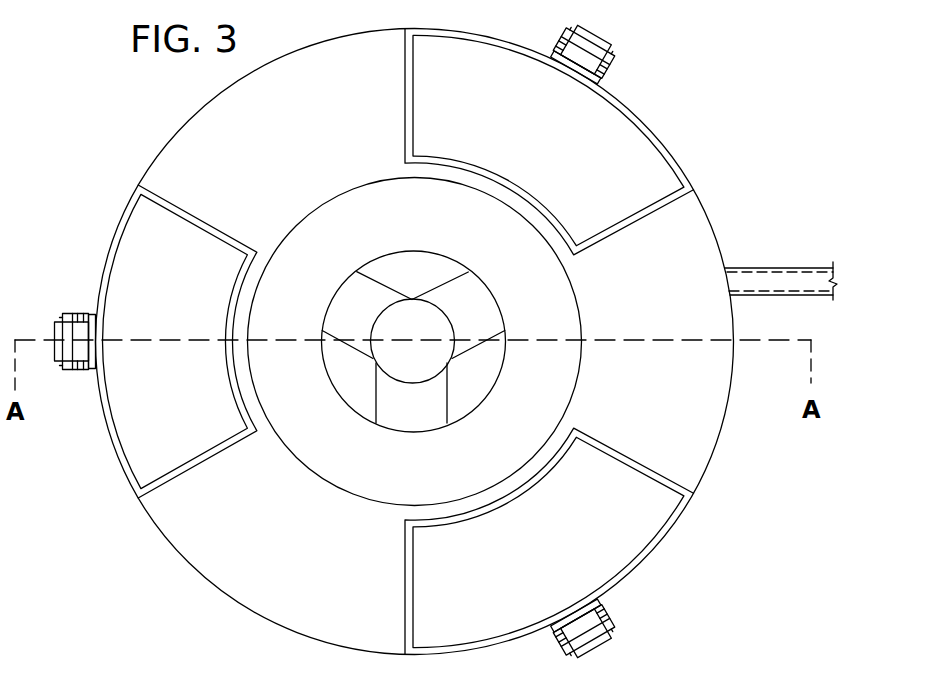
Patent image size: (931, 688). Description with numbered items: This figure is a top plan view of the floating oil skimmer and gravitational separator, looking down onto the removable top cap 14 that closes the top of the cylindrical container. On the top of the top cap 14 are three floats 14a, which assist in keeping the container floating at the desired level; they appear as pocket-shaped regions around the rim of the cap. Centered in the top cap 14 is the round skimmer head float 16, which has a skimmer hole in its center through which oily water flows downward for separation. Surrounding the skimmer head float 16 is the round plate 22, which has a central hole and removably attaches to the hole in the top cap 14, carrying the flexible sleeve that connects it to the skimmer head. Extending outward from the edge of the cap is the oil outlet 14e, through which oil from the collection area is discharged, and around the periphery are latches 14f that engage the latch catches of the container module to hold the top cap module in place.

The top cap 14 is at (308, 159).
The floats 14a is at (697, 215).
The oil outlet 14e is at (775, 267).
The latches 14f is at (610, 632).
The skimmer head float 16 is at (417, 267).
The round plate 22 is at (540, 311).